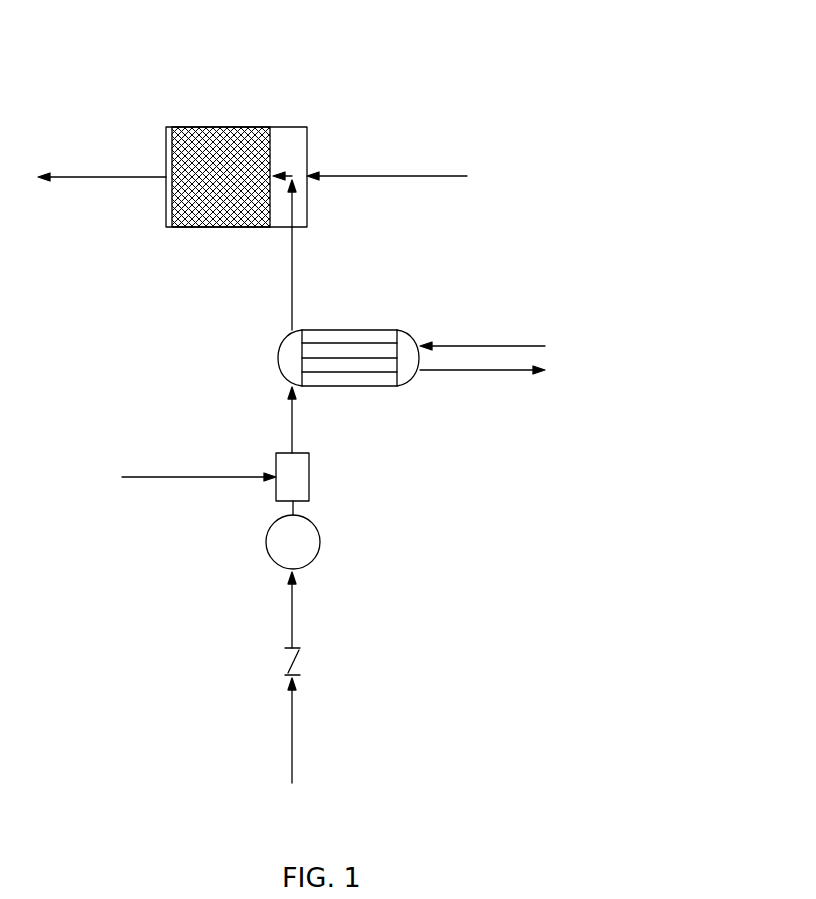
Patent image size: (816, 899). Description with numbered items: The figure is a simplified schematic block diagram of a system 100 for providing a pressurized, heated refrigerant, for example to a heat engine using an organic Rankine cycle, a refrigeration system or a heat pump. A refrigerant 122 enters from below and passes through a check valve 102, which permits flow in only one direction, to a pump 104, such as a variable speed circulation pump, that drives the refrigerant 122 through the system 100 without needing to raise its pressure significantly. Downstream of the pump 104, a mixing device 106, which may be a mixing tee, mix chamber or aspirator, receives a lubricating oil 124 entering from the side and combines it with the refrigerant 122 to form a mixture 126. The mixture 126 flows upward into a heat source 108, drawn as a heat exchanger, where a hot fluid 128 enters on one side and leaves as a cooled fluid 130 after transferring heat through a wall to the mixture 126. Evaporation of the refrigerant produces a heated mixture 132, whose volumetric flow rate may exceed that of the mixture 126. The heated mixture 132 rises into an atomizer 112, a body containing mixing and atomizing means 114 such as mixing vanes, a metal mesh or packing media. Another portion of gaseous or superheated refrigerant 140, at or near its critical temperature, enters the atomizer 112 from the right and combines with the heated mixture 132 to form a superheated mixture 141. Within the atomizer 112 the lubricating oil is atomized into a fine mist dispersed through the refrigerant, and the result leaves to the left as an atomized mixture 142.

The system 100 is at (556, 71).
The check valve 102 is at (300, 650).
The pump 104 is at (320, 540).
The mixing device 106 is at (309, 487).
The heat source 108 is at (278, 356).
The atomizer 112 is at (307, 163).
The mixing and atomizing means 114 is at (192, 135).
The refrigerant 122 is at (292, 757).
The lubricating oil 124 is at (210, 477).
The mixture 126 is at (293, 430).
The hot fluid 128 is at (543, 345).
The cooled fluid 130 is at (505, 372).
The heated mixture 132 is at (292, 297).
The refrigerant 140 is at (397, 176).
The superheated mixture 141 is at (287, 175).
The atomized mixture 142 is at (107, 177).